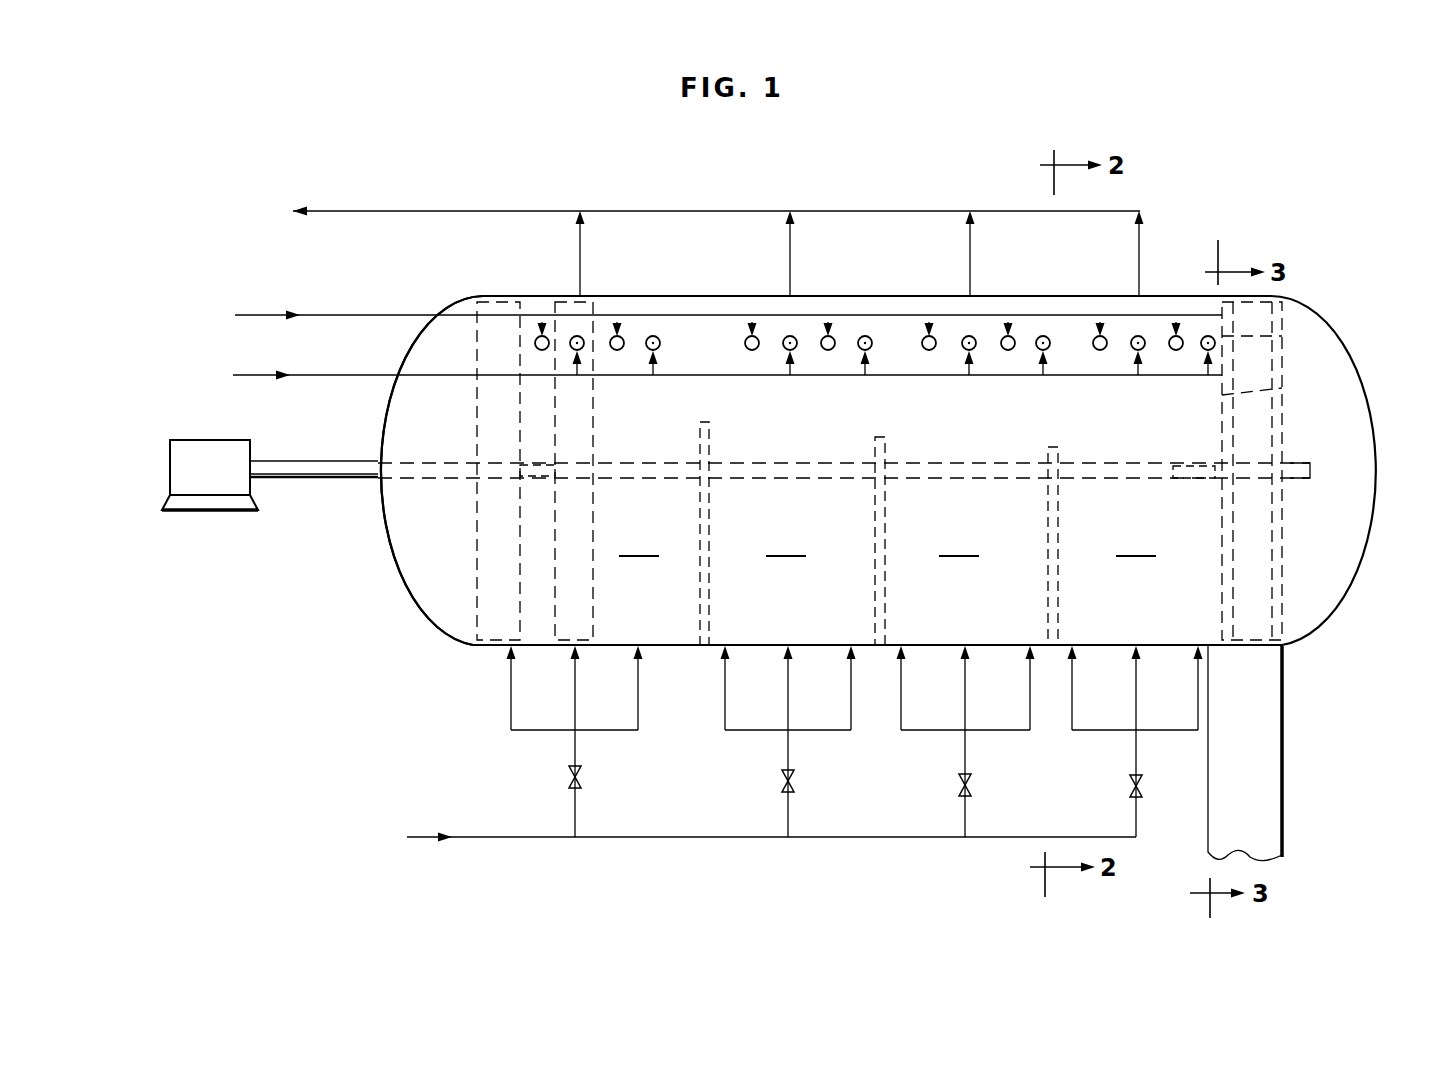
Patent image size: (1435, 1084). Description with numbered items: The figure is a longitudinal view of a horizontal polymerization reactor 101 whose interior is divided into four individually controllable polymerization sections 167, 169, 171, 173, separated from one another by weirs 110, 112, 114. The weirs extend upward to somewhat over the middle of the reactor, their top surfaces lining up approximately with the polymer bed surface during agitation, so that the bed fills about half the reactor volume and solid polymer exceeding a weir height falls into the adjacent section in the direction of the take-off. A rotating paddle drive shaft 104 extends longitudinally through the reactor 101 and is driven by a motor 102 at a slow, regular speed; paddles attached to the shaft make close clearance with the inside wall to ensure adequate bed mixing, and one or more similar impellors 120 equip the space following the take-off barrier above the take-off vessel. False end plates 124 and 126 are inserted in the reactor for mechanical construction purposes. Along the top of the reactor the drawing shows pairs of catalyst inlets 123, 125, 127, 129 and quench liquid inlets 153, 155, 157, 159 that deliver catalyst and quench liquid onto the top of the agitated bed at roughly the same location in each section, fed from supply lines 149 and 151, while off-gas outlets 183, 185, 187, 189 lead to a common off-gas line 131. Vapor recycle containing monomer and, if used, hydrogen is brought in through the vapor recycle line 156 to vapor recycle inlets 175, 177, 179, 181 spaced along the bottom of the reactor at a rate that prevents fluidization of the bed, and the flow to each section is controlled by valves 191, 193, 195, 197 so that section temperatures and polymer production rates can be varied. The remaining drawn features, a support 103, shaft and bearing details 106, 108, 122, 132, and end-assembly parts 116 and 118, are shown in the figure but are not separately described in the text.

The reactor 101 is at (1310, 604).
The motor 102 is at (185, 460).
The support 103 is at (1270, 751).
The rotating paddle drive shaft 104 is at (348, 463).
The rotor 106 is at (490, 595).
The bearing 108 is at (540, 478).
The weir 110 is at (705, 585).
The weir 112 is at (878, 590).
The weir 114 is at (1050, 592).
The end plate 116 is at (1282, 388).
The bearing support 118 is at (1282, 332).
The impellor 120 is at (1255, 432).
The rotor 122 is at (588, 440).
The inlet nozzle 123 is at (611, 340).
The false end plate 124 is at (1275, 323).
The inlet nozzle 125 is at (822, 338).
The false end plate 126 is at (478, 620).
The inlet nozzle 127 is at (1003, 338).
The inlet nozzle 129 is at (1170, 338).
The outlet line 131 is at (680, 209).
The bearing 132 is at (1200, 465).
The inlet line 149 is at (302, 317).
The inlet line 151 is at (300, 377).
The outlet nozzle 153 is at (656, 352).
The outlet nozzle 155 is at (868, 352).
The vapor recycle line 156 is at (497, 838).
The outlet nozzle 157 is at (1040, 352).
The outlet nozzle 159 is at (1205, 352).
The polymerization section 167 is at (639, 544).
The polymerization section 169 is at (786, 544).
The polymerization section 171 is at (959, 544).
The polymerization section 173 is at (1136, 544).
The vapor recycle inlet 175 is at (570, 728).
The vapor recycle inlet 177 is at (783, 728).
The vapor recycle inlet 179 is at (960, 730).
The vapor recycle inlet 181 is at (1128, 728).
The outlet riser 183 is at (1141, 296).
The outlet riser 185 is at (972, 296).
The outlet riser 187 is at (792, 296).
The outlet riser 189 is at (582, 296).
The valve 191 is at (582, 777).
The valve 193 is at (795, 781).
The valve 195 is at (972, 785).
The valve 197 is at (1142, 786).